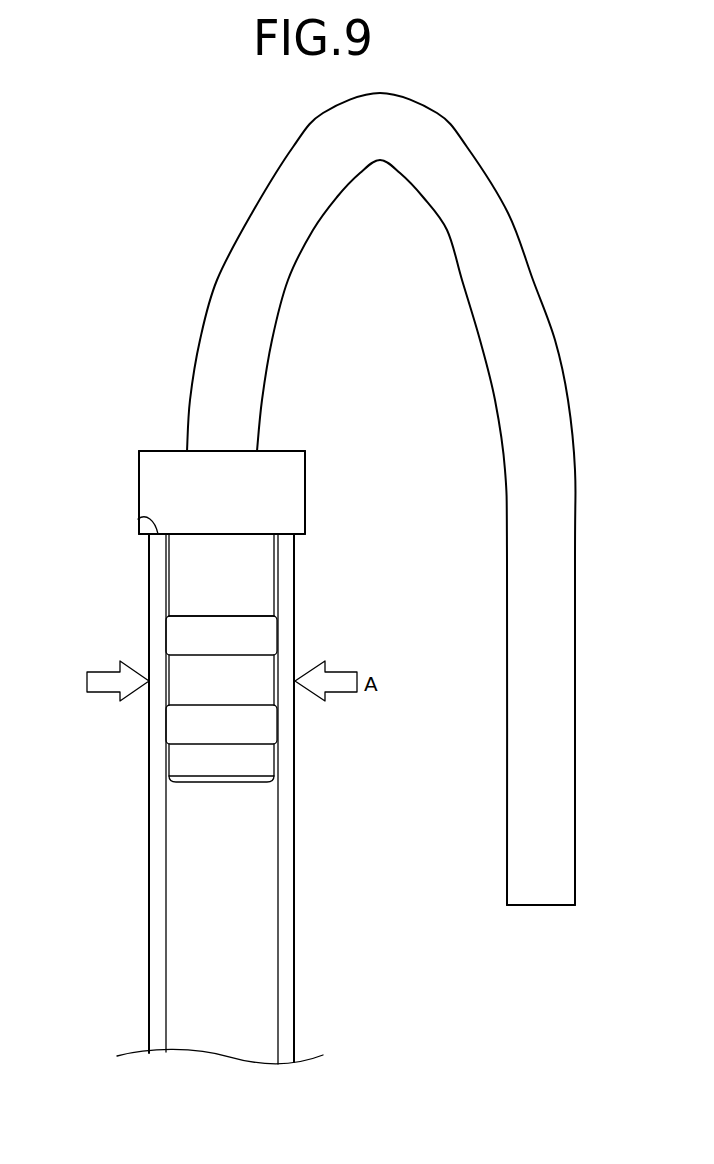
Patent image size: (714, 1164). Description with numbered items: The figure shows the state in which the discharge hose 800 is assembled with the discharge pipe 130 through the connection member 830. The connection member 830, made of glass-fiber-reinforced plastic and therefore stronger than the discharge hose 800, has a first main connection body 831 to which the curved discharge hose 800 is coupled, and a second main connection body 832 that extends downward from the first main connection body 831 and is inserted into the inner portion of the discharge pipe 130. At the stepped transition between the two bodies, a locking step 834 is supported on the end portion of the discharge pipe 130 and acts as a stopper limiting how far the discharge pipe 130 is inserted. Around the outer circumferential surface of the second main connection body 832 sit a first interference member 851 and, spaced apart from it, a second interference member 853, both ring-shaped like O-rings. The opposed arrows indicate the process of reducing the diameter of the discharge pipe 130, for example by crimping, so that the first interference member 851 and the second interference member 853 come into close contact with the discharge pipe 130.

The discharge hose 800 is at (202, 345).
The connection member 830 is at (126, 445).
The first main connection body 831 is at (152, 483).
The locking step 834 is at (138, 519).
The second main connection body 832 is at (265, 585).
The first interference member 851 is at (168, 634).
The second interference member 853 is at (168, 725).
The discharge pipe 130 is at (288, 885).